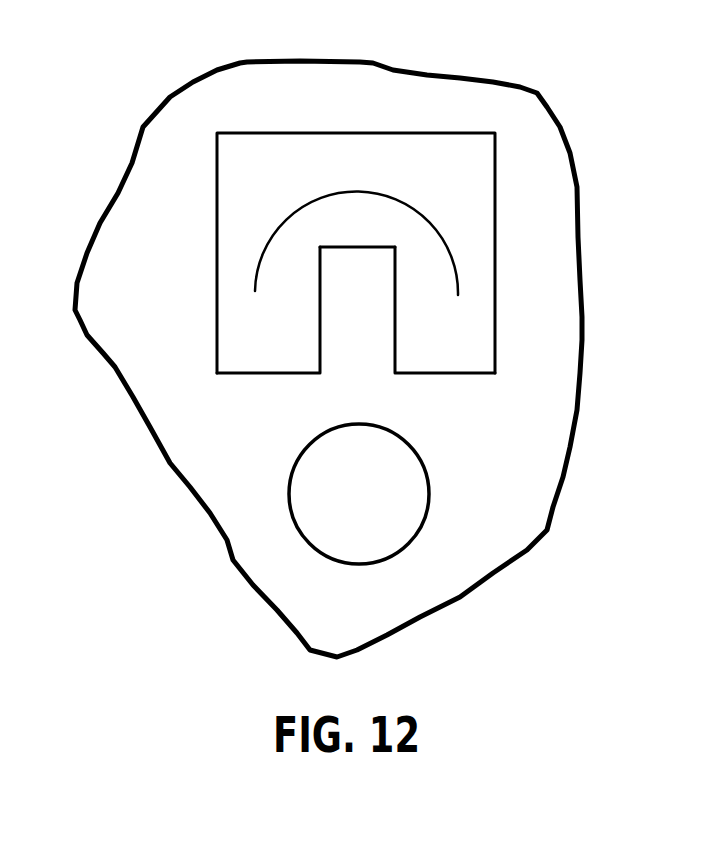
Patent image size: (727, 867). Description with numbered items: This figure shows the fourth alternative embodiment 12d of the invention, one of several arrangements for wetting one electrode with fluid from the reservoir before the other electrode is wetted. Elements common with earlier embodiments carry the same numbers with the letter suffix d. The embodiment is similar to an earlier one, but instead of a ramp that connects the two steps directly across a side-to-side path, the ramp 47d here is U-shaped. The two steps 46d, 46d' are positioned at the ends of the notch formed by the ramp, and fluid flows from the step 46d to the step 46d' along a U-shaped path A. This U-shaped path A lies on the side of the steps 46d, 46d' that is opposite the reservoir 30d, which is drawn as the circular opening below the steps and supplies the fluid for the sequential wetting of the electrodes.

The fourth alternative embodiment 12d is at (292, 88).
The ramp 47d is at (397, 140).
The step 46d' is at (268, 340).
The step 46d is at (446, 340).
The U-shaped path A is at (423, 217).
The reservoir 30d is at (398, 515).